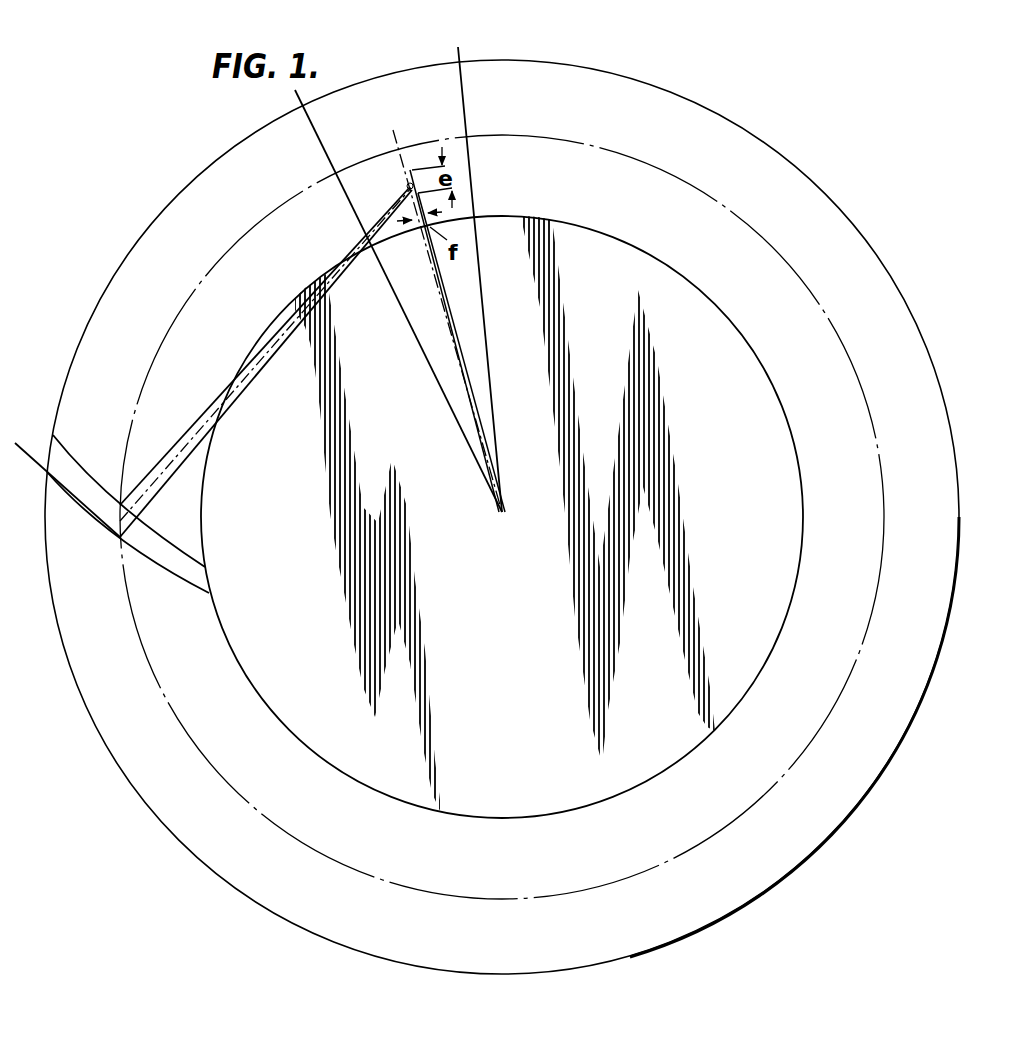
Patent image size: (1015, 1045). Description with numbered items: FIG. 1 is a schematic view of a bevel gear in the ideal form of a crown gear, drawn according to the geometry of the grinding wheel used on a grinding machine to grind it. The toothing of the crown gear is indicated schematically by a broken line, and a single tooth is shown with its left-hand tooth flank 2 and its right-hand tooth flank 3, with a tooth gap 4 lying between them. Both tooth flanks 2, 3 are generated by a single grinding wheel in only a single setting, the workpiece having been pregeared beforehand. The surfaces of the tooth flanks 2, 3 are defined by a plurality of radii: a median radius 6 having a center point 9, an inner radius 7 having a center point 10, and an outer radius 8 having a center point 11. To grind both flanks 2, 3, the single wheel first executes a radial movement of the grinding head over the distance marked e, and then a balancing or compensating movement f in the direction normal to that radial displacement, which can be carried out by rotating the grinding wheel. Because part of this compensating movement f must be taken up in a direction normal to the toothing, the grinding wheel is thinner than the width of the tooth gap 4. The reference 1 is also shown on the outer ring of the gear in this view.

The outer ring / housing 1 is at (933, 585).
The left-hand tooth flank 2 is at (153, 567).
The right-hand tooth flank 3 is at (82, 470).
The tooth gap 4 is at (50, 457).
The median radius 6 is at (203, 465).
The inner radius 7 is at (182, 438).
The outer radius 8 is at (157, 490).
The center point 9 is at (408, 185).
The center point 10 is at (402, 222).
The center point 11 is at (413, 166).